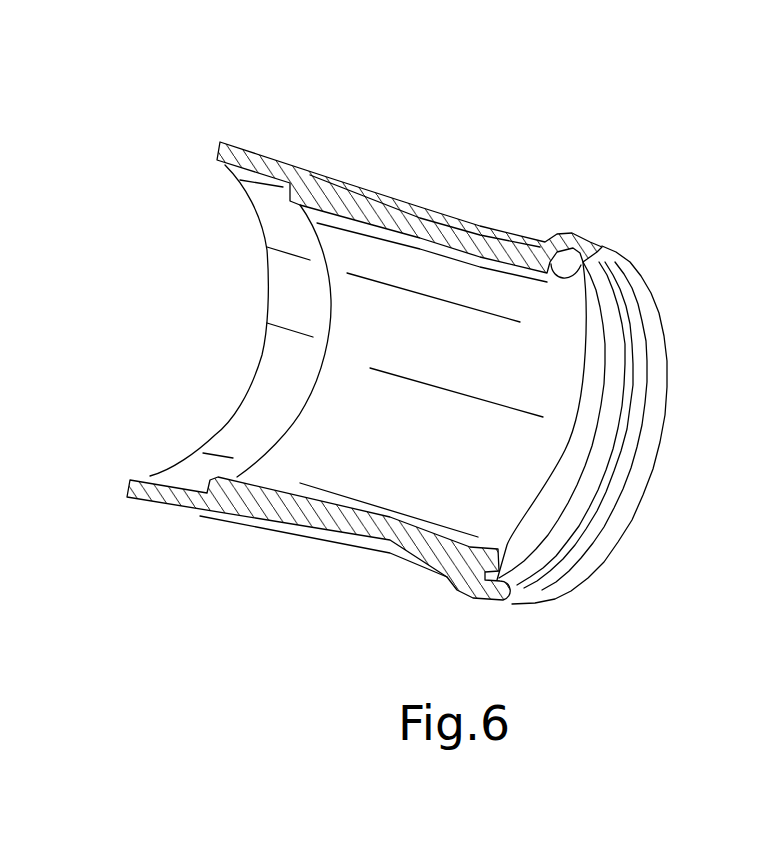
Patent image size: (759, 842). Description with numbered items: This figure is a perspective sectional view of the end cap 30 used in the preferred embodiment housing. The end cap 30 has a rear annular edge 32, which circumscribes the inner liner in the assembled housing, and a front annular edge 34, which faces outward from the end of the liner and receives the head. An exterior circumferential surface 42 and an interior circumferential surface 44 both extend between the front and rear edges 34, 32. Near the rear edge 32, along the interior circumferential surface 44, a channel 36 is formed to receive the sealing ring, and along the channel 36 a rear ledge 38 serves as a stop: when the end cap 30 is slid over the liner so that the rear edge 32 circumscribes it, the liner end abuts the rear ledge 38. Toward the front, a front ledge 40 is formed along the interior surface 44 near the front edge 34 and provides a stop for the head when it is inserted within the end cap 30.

The end cap 30 is at (146, 77).
The rear annular edge 32 is at (618, 262).
The front annular edge 34 is at (218, 151).
The channel 36 is at (577, 266).
The rear ledge 38 is at (570, 277).
The front ledge 40 is at (285, 198).
The exterior circumferential surface 42 is at (378, 203).
The interior circumferential surface 44 is at (436, 360).